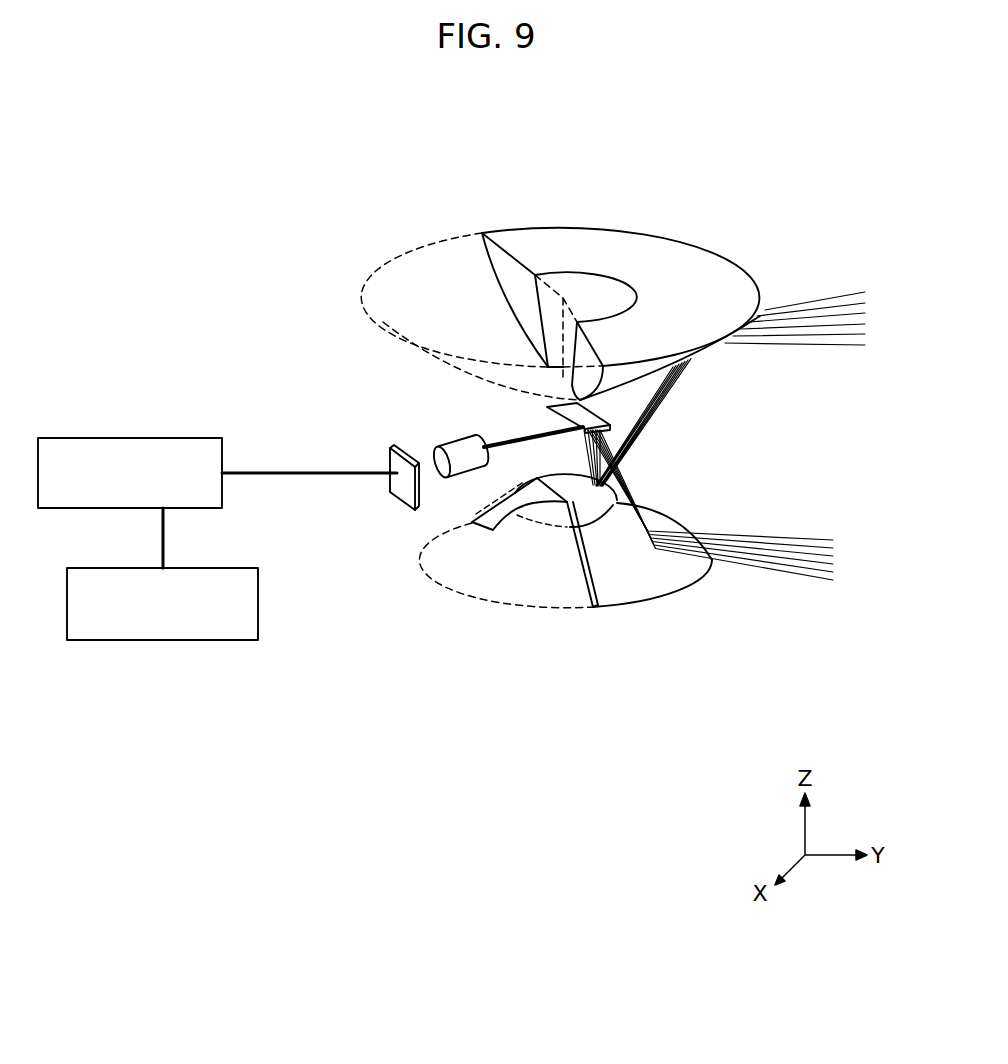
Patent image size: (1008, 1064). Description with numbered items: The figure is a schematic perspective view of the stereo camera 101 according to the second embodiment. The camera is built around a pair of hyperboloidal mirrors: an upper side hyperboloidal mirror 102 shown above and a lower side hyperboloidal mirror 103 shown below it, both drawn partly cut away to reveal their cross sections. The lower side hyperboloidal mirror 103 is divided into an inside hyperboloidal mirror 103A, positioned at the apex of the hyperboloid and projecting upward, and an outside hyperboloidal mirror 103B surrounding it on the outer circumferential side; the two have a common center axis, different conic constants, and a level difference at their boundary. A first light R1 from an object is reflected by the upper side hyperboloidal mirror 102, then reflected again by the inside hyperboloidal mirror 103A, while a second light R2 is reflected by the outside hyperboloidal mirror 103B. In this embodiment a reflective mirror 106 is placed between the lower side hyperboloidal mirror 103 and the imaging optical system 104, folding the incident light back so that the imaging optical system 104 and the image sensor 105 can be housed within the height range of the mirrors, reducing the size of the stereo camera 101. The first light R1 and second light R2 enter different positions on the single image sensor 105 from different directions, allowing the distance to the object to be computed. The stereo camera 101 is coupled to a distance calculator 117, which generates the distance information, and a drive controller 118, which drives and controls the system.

The stereo camera 101 is at (700, 180).
The upper side hyperboloidal mirror 102 is at (702, 250).
The lower side hyperboloidal mirror 103 is at (615, 581).
The inside hyperboloidal mirror 103A is at (600, 510).
The outside hyperboloidal mirror 103B is at (617, 600).
The imaging optical system 104 is at (458, 442).
The image sensor 105 is at (390, 447).
The reflective mirror 106 is at (607, 432).
The distance calculator 117 is at (168, 437).
The drive controller 118 is at (190, 569).
The first light R1 is at (817, 357).
The second light R2 is at (810, 585).